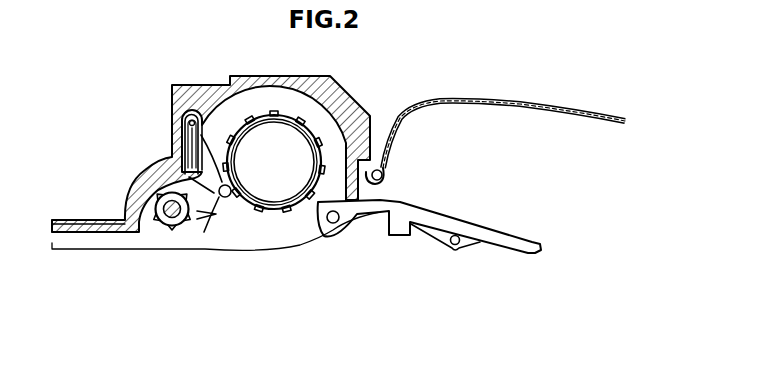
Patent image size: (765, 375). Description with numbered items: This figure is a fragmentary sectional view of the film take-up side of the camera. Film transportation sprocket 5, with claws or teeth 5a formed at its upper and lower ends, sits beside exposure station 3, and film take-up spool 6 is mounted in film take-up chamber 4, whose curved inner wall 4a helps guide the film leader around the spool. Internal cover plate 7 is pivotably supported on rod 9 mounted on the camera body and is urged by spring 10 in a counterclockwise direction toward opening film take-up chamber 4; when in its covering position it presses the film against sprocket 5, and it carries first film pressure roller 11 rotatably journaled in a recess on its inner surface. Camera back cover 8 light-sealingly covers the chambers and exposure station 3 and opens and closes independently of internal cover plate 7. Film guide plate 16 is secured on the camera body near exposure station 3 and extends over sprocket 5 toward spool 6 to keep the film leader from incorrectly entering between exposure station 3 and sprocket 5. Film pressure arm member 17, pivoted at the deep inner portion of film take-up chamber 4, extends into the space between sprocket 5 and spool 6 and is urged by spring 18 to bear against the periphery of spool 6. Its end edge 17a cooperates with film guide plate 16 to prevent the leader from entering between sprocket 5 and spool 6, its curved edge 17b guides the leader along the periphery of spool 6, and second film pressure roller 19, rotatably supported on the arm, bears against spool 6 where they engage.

The exposure station 3 is at (96, 235).
The film take-up chamber 4 is at (278, 120).
The curved inner wall 4a is at (335, 114).
The film transportation sprocket 5 is at (155, 228).
The claws or teeth 5a is at (172, 240).
The film take-up spool 6 is at (280, 175).
The internal cover plate 7 is at (460, 224).
The camera back cover 8 is at (497, 100).
The rod 9 is at (333, 224).
The spring 10 is at (352, 206).
The first film pressure roller 11 is at (456, 246).
The film guide plate 16 is at (205, 236).
The film pressure arm member 17 is at (180, 172).
The end edge 17a is at (220, 205).
The curved edge 17b is at (214, 102).
The spring 18 is at (185, 128).
The second film pressure roller 19 is at (231, 197).